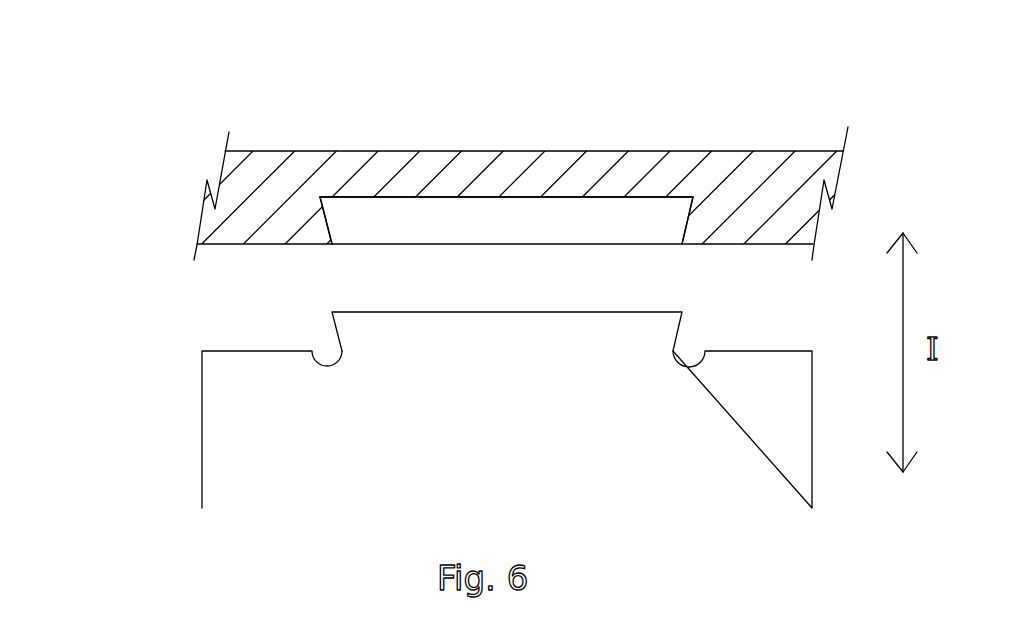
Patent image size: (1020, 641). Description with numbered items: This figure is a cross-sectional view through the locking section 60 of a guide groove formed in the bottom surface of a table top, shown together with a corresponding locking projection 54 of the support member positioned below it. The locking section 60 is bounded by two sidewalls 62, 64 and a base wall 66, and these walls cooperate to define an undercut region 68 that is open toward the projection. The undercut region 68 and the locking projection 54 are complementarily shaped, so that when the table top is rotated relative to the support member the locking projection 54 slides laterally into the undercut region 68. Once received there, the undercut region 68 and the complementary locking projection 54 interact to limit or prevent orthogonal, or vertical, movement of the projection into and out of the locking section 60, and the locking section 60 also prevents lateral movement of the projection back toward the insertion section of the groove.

The locking projection 54 is at (682, 328).
The locking section 60 is at (338, 274).
The sidewall 62 is at (328, 222).
The sidewall 64 is at (692, 217).
The base wall 66 is at (503, 197).
The undercut region 68 is at (473, 220).